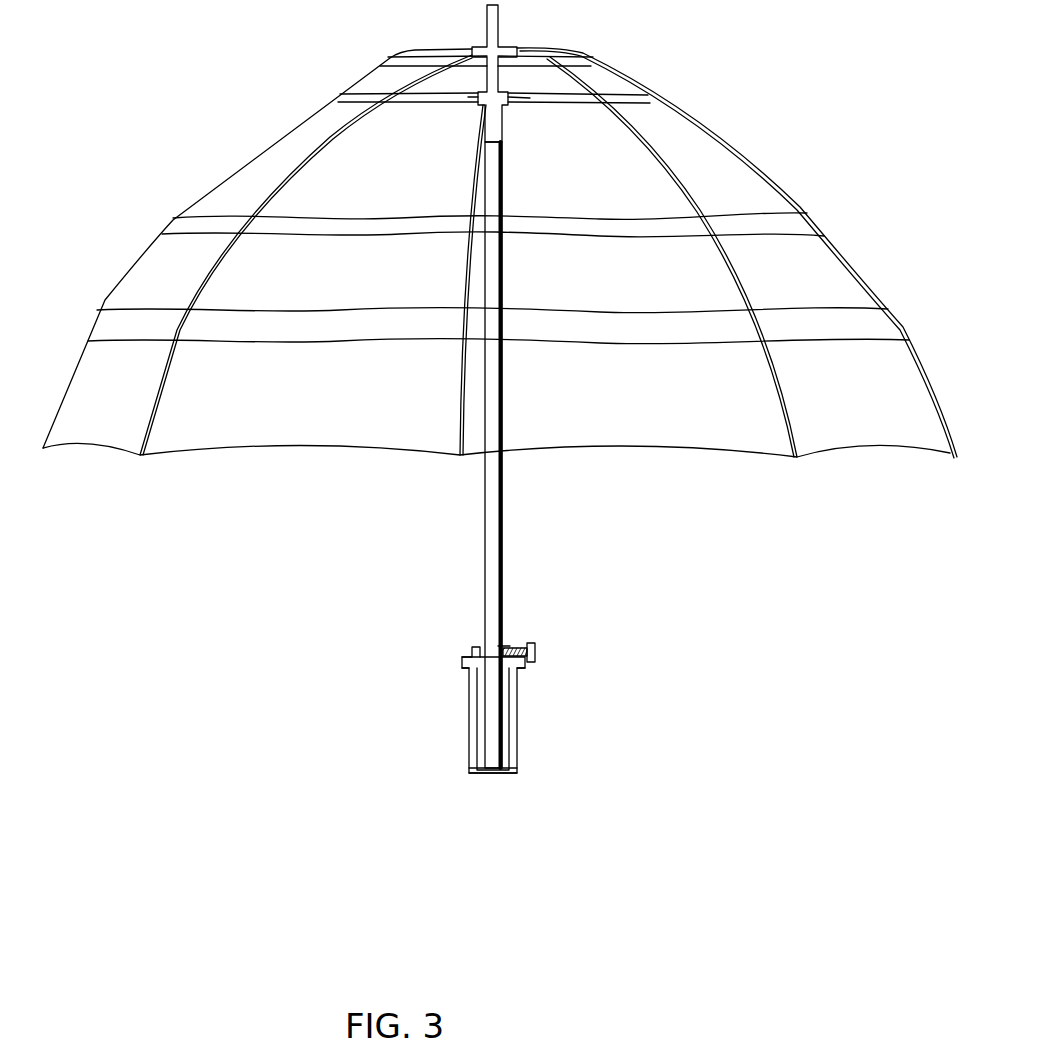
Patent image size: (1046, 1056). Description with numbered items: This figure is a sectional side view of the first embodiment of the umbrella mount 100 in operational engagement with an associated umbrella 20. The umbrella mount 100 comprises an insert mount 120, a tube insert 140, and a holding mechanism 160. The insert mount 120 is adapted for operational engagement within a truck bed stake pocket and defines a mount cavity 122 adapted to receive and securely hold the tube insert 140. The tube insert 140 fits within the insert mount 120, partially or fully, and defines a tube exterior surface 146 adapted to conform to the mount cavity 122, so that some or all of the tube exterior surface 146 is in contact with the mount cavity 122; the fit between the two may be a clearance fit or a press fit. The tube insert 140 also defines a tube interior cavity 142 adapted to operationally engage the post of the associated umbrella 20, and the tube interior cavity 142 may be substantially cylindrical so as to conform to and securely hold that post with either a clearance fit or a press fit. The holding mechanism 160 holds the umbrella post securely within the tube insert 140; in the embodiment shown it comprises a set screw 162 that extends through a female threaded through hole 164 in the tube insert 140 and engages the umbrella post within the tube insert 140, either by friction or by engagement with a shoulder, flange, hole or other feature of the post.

The associated umbrella 20 is at (398, 488).
The umbrella mount 100 is at (461, 714).
The insert mount 120 is at (458, 715).
The mount cavity 122 is at (486, 777).
The tube insert 140 is at (500, 778).
The tube interior cavity 142 is at (478, 657).
The tube exterior surface 146 is at (507, 722).
The holding mechanism 160 is at (617, 629).
The set screw 162 is at (535, 655).
The female threaded through hole 164 is at (511, 645).